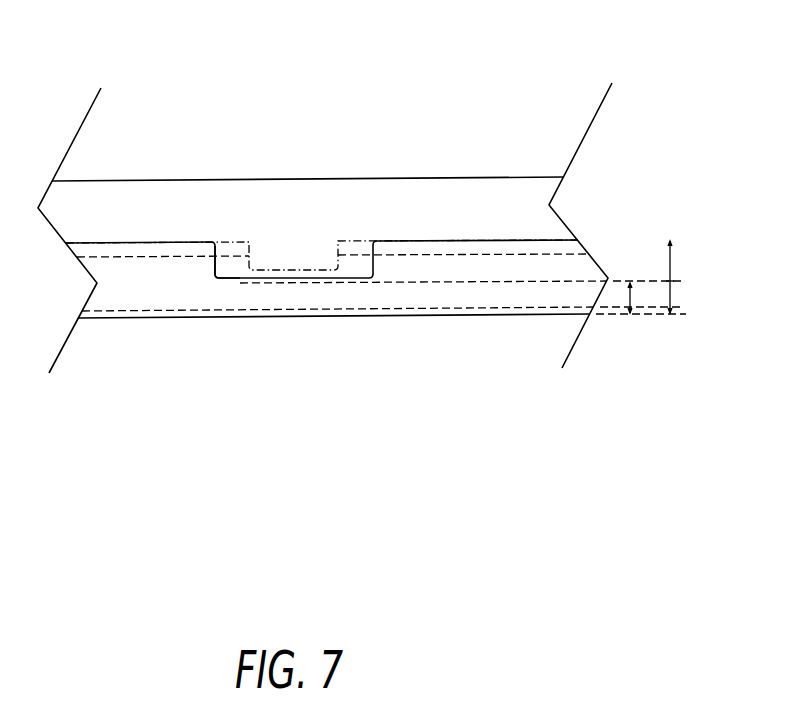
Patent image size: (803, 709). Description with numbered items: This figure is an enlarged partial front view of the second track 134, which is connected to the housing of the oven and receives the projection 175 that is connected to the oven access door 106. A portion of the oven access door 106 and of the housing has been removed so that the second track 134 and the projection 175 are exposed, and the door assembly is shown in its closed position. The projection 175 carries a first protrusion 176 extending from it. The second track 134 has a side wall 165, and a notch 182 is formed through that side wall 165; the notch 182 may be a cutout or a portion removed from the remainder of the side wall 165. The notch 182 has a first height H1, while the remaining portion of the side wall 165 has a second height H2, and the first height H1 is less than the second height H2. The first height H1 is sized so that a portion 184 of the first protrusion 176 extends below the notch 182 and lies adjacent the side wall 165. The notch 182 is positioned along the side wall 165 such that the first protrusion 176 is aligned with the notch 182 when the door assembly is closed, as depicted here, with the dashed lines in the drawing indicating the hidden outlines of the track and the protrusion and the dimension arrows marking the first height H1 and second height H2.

The oven access door 106 is at (523, 230).
The projection 175 is at (430, 196).
The first protrusion 176 is at (268, 282).
The notch 182 is at (218, 278).
The portion of protrusion 184 is at (300, 284).
The side wall 165 is at (390, 287).
The second track 134 is at (468, 293).
The first height H1 is at (632, 293).
The second height H2 is at (672, 276).